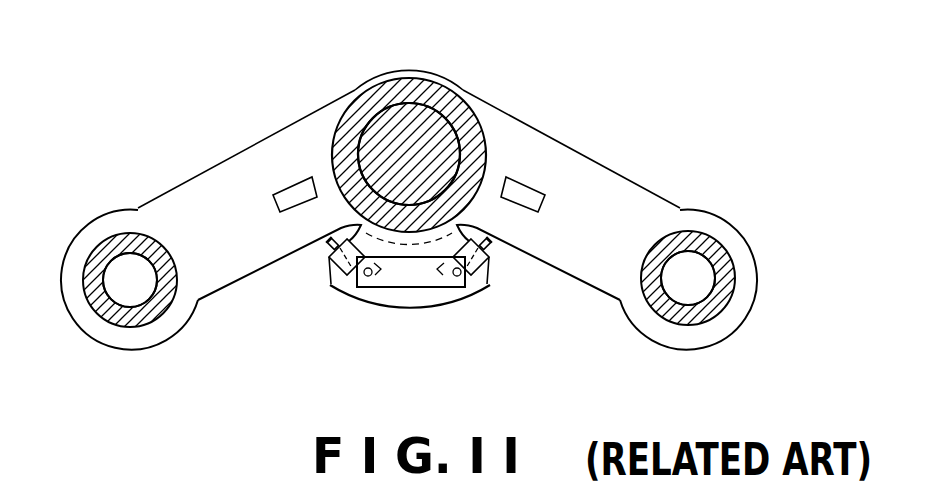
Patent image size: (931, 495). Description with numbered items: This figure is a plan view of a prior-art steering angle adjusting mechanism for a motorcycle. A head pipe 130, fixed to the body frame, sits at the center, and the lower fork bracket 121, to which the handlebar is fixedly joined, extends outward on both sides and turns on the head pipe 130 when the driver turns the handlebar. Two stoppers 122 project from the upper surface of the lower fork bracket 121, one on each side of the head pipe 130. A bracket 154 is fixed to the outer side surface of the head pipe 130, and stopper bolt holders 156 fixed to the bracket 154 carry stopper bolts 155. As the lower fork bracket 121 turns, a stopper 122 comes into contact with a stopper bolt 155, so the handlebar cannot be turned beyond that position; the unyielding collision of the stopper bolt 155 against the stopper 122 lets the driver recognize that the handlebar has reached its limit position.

The lower fork bracket 121 is at (608, 190).
The stopper 122 is at (287, 190).
The head pipe 130 is at (406, 88).
The bracket 154 is at (400, 300).
The stopper bolt 155 is at (326, 247).
The stopper bolt holder 156 is at (465, 290).